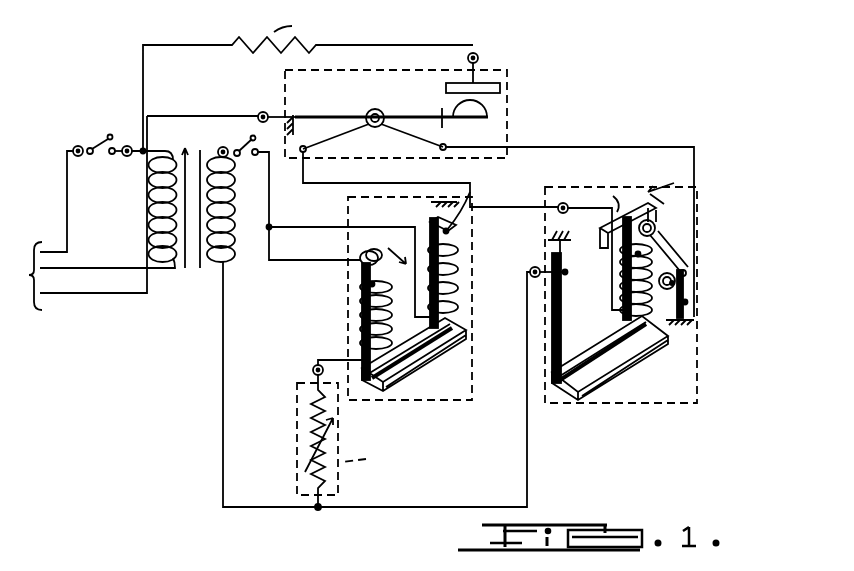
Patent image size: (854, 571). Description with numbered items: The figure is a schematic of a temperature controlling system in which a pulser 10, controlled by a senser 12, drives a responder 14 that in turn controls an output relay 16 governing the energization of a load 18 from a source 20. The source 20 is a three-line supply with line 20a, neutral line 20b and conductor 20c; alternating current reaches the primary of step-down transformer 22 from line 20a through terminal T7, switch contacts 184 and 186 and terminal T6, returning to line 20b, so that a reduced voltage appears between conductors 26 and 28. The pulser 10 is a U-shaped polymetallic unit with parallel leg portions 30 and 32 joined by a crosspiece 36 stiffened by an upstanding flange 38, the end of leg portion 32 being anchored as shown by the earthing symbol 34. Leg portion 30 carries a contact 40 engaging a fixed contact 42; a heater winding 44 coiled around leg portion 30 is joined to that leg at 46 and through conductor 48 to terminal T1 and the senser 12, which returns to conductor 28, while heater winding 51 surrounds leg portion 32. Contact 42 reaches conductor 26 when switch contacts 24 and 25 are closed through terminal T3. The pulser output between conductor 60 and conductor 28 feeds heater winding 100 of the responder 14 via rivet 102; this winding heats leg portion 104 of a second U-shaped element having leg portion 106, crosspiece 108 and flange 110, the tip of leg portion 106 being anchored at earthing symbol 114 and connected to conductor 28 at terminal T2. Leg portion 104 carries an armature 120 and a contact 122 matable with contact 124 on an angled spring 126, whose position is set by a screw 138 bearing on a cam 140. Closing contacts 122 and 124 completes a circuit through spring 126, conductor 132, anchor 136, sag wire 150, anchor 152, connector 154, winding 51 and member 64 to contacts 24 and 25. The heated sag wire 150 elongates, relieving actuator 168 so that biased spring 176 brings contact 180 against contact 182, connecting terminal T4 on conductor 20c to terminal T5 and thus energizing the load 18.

The pulser 10 is at (342, 292).
The senser 12 is at (296, 412).
The responder 14 is at (702, 350).
The output relay 16 is at (508, 128).
The load 18 is at (246, 40).
The source of energy 20 is at (25, 276).
The line 20a is at (50, 246).
The line 20b is at (62, 268).
The conductor 20c is at (62, 293).
The step-down transformer 22 is at (185, 148).
The switch contact 24 is at (267, 172).
The switch contact 25 is at (254, 140).
The conductor 26 is at (221, 147).
The conductor 28 is at (222, 316).
The leg portion 30 is at (372, 276).
The leg portion 32 is at (455, 250).
The earthing symbol 34 is at (441, 195).
The crosspiece 36 is at (414, 354).
The upstanding flange 38 is at (404, 377).
The electrical contact 40 is at (380, 245).
The fixed contact 42 is at (360, 256).
The heater winding 44 is at (362, 313).
The connection 46 is at (362, 285).
The conductor 48 is at (333, 360).
The heater winding 51 is at (456, 281).
The conductor 60 is at (512, 204).
The member 64 is at (422, 232).
The heater winding 100 is at (620, 279).
The rivet 102 is at (567, 203).
The leg portion 104 is at (635, 255).
The leg portion 106 is at (598, 303).
The crosspiece 108 is at (600, 360).
The flange 110 is at (627, 346).
The earthing symbol 114 is at (580, 222).
The armature 120 is at (614, 205).
The electrical contact 122 is at (656, 214).
The electrical contact 124 is at (657, 226).
The angled spring 126 is at (688, 302).
The conductor 132 is at (640, 148).
The anchor 136 is at (457, 139).
The screw 138 is at (688, 271).
The cam 140 is at (676, 284).
The sag wire 150 is at (418, 135).
The anchor 152 is at (308, 149).
The connector 154 is at (322, 183).
The actuator 168 is at (377, 110).
The spring 176 is at (313, 115).
The contact 180 is at (480, 112).
The contact 182 is at (497, 90).
The switch contact 184 is at (112, 157).
The switch contact 186 is at (110, 135).
The terminal T1 is at (312, 367).
The terminal T2 is at (536, 266).
The terminal T3 is at (223, 147).
The terminal T4 is at (264, 112).
The terminal T5 is at (480, 54).
The terminal T6 is at (127, 145).
The terminal T7 is at (77, 145).